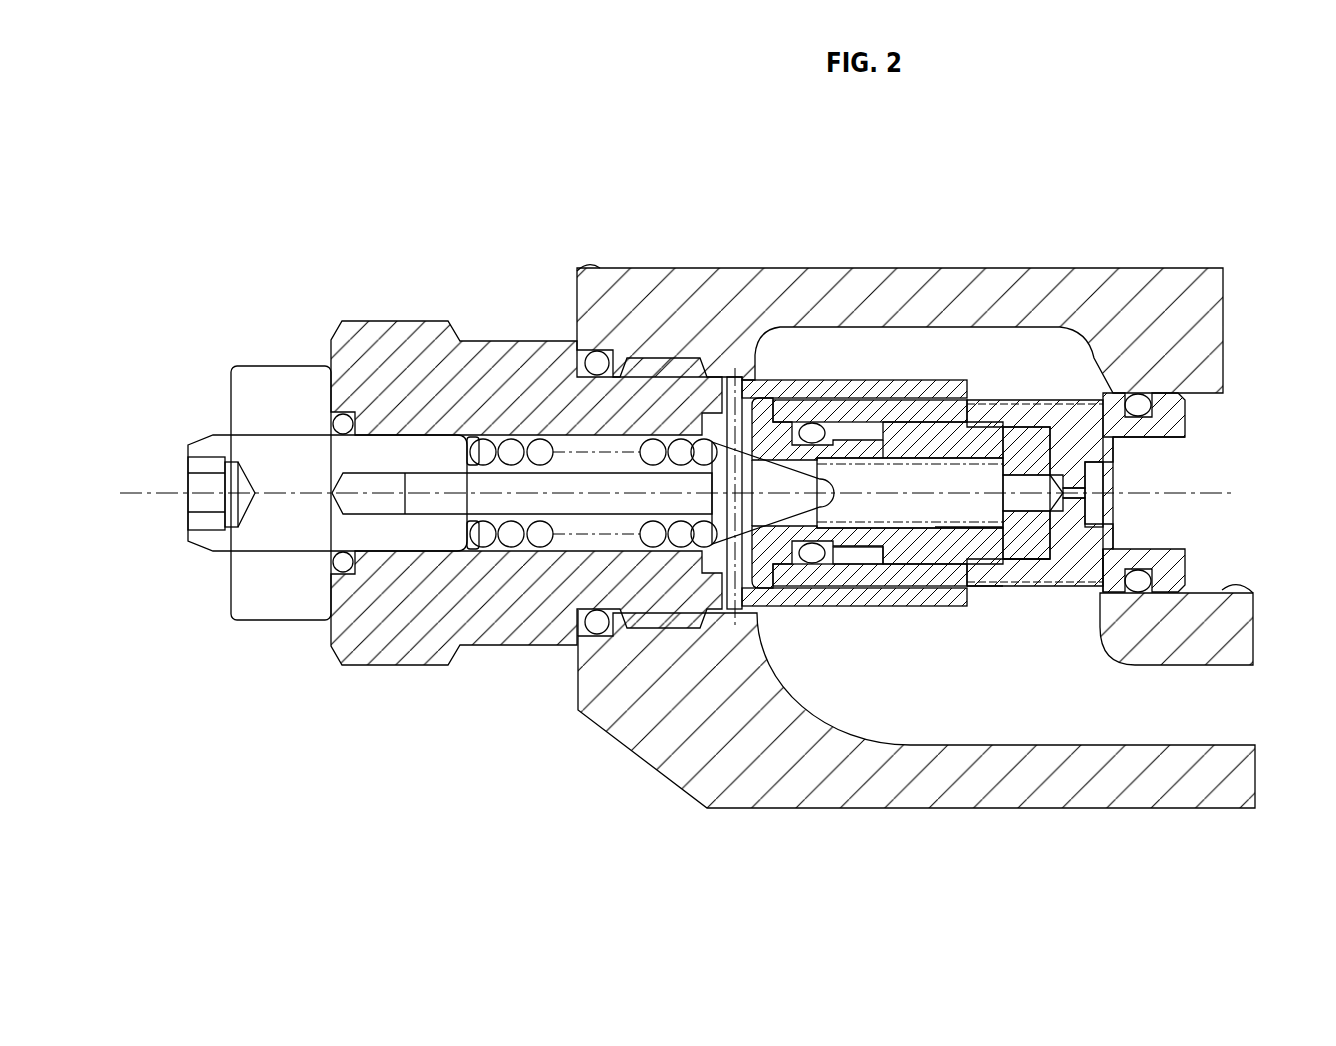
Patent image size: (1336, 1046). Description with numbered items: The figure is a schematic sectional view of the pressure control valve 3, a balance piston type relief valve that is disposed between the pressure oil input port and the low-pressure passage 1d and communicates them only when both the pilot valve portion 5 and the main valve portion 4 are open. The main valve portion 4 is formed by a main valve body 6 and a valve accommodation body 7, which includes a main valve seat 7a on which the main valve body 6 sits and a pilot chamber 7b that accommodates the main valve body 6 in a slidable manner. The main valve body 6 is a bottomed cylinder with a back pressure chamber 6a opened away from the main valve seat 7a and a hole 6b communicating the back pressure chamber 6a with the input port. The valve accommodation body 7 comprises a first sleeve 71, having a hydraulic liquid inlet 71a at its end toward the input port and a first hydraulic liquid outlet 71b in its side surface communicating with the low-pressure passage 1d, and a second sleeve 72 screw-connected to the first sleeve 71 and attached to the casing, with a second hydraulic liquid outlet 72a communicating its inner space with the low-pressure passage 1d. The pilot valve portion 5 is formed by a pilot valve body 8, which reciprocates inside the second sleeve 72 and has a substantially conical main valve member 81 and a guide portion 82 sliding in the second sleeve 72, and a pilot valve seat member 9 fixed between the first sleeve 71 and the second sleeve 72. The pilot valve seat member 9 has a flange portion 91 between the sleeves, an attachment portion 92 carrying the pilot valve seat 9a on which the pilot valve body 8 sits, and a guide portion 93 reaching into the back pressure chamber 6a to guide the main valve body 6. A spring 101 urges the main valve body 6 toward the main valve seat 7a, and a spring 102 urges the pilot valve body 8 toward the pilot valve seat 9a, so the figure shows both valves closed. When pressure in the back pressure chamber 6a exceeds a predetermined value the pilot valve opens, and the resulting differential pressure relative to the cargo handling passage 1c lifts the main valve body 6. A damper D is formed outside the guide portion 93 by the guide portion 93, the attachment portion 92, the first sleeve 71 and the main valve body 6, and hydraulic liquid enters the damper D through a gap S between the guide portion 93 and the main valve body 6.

The cargo handling passage 1c is at (1198, 415).
The low-pressure passage 1d is at (1085, 718).
The pressure control valve 3 is at (1198, 460).
The main valve portion 4 is at (1110, 583).
The pilot valve portion 5 is at (738, 440).
The main valve body 6 is at (1030, 440).
The back pressure chamber 6a is at (945, 515).
The hole 6b is at (1075, 488).
The valve accommodation body 7 is at (968, 606).
The main valve seat 7a is at (1098, 573).
The pilot chamber 7b is at (1013, 555).
The pilot valve body 8 is at (633, 522).
The pilot valve seat member 9 is at (800, 500).
The pilot valve seat 9a is at (754, 518).
The first sleeve 71 is at (990, 592).
The hydraulic liquid inlet 71a is at (1152, 548).
The first hydraulic liquid outlet 71b is at (1104, 392).
The second sleeve 72 is at (447, 632).
The second hydraulic liquid outlet 72a is at (735, 377).
The main valve member 81 is at (789, 582).
The guide portion 82 is at (560, 505).
The flange portion 91 is at (757, 380).
The attachment portion 92 is at (808, 420).
The guide portion 93 is at (862, 450).
The spring 101 is at (948, 455).
The spring 102 is at (515, 545).
The damper D is at (857, 555).
The gap S is at (892, 512).